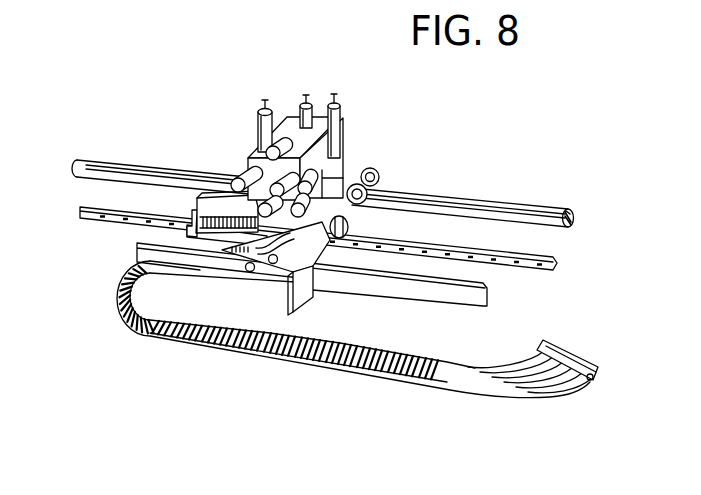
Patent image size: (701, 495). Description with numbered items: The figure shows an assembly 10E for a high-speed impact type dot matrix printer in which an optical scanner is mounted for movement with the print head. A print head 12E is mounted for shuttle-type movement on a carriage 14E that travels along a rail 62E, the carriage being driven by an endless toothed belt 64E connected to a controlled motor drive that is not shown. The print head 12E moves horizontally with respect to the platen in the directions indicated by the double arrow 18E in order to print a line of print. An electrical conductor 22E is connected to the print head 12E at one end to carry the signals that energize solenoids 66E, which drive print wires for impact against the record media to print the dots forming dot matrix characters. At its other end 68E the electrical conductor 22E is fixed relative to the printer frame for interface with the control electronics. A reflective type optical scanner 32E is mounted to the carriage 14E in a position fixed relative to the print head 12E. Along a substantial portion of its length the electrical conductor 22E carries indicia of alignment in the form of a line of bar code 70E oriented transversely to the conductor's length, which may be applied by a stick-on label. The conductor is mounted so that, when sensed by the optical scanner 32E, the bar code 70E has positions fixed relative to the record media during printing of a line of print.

The assembly 10E is at (463, 183).
The print head 12E is at (318, 150).
The carriage 14E is at (338, 180).
The directions of print head movement 18E is at (355, 78).
The electrical conductor 22E is at (122, 325).
The reflective type optical scanner 32E is at (310, 297).
The rail 62E is at (576, 216).
The endless toothed belt 64E is at (554, 263).
The solenoids 66E is at (246, 170).
The end of electrical conductor 68E is at (570, 357).
The bar code 70E is at (345, 363).